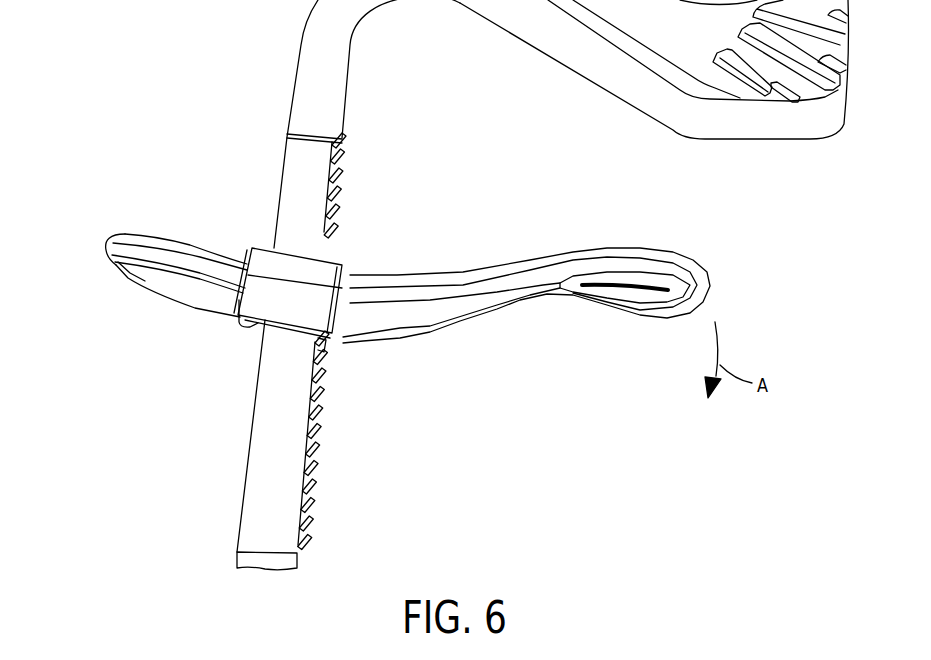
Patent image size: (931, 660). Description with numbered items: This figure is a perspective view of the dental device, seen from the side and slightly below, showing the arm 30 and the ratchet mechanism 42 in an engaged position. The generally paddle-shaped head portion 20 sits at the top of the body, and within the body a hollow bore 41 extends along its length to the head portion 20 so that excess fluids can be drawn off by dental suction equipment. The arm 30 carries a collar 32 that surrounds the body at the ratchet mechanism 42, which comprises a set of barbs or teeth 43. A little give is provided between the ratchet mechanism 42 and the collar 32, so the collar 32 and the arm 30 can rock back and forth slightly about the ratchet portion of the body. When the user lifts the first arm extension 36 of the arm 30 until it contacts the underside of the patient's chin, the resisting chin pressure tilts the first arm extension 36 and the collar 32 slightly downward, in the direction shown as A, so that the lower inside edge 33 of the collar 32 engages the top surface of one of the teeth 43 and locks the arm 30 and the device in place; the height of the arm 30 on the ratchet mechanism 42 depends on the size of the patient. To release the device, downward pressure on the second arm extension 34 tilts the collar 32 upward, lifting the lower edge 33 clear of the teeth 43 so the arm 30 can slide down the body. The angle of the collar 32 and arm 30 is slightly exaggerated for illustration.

The head portion 20 is at (763, 140).
The arm 30 is at (408, 278).
The collar 32 is at (243, 323).
The lower inside edge of the collar 33 is at (330, 345).
The second arm extension 34 is at (103, 249).
The first arm extension 36 is at (720, 270).
The hollow bore 41 is at (308, 50).
The ratchet mechanism 42 is at (347, 192).
The teeth 43 is at (323, 378).